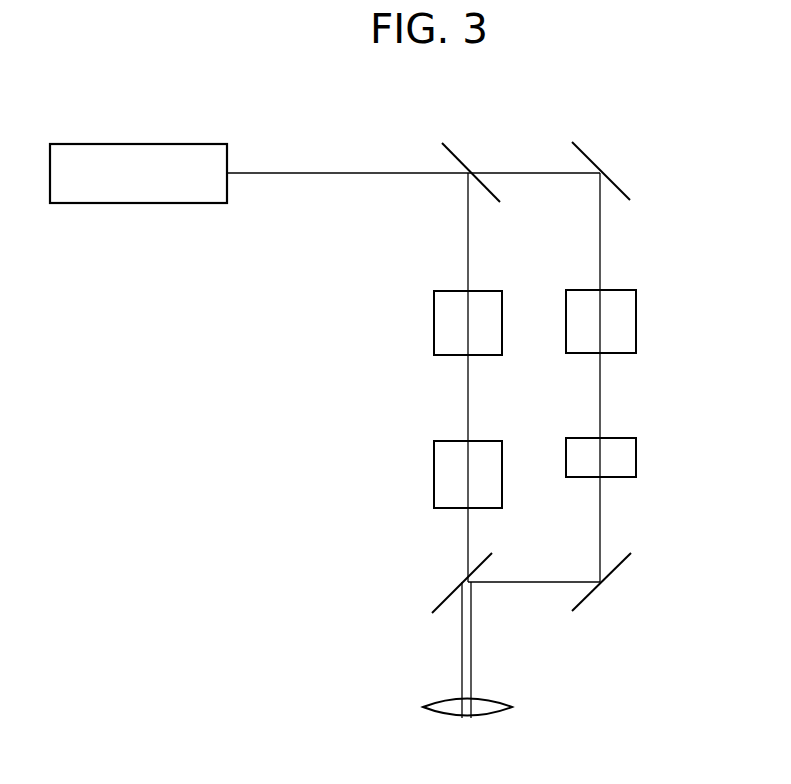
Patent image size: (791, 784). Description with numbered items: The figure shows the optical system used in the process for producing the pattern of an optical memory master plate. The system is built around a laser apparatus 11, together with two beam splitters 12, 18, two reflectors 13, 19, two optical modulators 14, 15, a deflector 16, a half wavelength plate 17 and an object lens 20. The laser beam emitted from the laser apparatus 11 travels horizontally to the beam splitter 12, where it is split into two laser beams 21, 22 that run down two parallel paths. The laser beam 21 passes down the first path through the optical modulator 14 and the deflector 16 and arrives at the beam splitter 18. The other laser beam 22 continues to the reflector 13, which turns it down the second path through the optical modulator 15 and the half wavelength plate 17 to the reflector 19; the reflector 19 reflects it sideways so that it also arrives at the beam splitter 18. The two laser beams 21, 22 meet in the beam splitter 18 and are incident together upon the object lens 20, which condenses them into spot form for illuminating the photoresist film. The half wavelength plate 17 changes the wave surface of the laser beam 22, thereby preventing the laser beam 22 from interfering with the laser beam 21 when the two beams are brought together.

The laser apparatus 11 is at (137, 155).
The beam splitter 12 is at (448, 150).
The reflector 13 is at (583, 150).
The optical modulator 14 is at (445, 315).
The optical modulator 15 is at (622, 330).
The deflector 16 is at (447, 465).
The half wavelength plate 17 is at (625, 463).
The beam splitter 18 is at (445, 598).
The reflector 19 is at (588, 600).
The object lens 20 is at (498, 705).
The laser beam 21 is at (468, 225).
The laser beam 22 is at (602, 240).